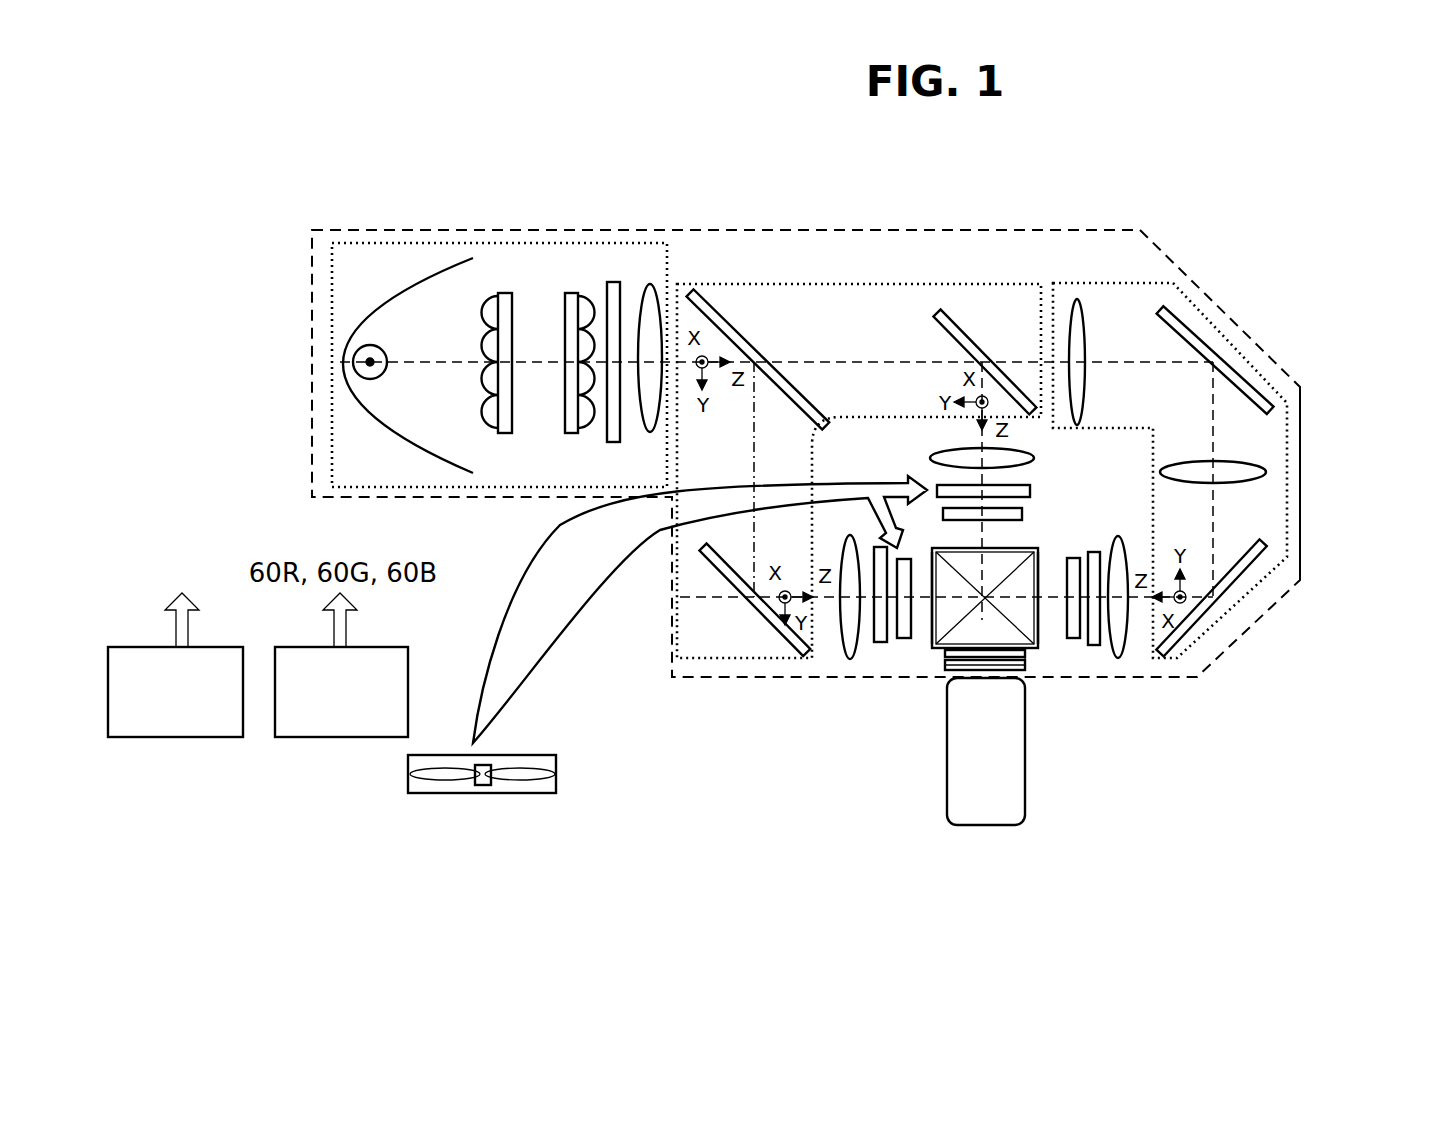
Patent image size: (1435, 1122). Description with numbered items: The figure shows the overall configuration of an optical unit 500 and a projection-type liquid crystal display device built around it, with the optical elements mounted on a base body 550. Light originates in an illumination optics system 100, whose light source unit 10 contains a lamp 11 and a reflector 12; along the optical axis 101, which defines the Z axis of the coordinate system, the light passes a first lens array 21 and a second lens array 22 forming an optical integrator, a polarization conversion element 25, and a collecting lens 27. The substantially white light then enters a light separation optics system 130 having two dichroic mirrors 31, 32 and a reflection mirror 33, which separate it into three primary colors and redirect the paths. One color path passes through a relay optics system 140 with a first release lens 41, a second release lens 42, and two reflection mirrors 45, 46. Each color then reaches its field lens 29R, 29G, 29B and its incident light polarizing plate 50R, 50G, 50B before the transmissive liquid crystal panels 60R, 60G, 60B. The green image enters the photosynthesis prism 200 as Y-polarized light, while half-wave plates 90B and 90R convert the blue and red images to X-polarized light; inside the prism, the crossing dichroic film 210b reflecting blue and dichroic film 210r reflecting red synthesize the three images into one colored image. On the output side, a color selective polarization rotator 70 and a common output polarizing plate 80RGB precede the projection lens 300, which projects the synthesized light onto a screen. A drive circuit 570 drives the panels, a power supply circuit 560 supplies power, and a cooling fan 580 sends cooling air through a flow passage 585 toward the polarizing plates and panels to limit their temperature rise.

The light source unit 10 is at (400, 297).
The lamp 11 is at (390, 343).
The reflector 12 is at (388, 300).
The illumination optics system 100 is at (472, 240).
The optical axis 101 is at (540, 365).
The first lens array 21 is at (507, 293).
The second lens array 22 is at (571, 293).
The polarization conversion element 25 is at (615, 282).
The collecting lens 27 is at (656, 290).
The dichroic mirror 31 is at (720, 310).
The dichroic mirror 32 is at (955, 320).
The reflection mirror 33 is at (748, 625).
The first release lens 41 is at (1080, 300).
The second release lens 42 is at (1265, 470).
The reflection mirror 45 is at (1190, 328).
The reflection mirror 46 is at (1262, 560).
The light separation optics system 130 is at (862, 281).
The relay optics system 140 is at (1127, 277).
The optical unit 500 is at (793, 226).
The base body 550 is at (1300, 500).
The field lens 29R is at (1122, 655).
The field lens 29G is at (940, 455).
The field lens 29B is at (845, 652).
The incident light polarizing plate 50R is at (1075, 640).
The incident light polarizing plate 50G is at (938, 488).
The incident light polarizing plate 50B is at (880, 645).
The transmissive liquid crystal panel 60R is at (1095, 648).
The transmissive liquid crystal panel 60G is at (1035, 500).
The transmissive liquid crystal panel 60B is at (903, 640).
The λ/2 wave plate 90R is at (1048, 645).
The λ/2 wave plate 90B is at (935, 652).
The photosynthesis prism 200 is at (943, 655).
The dichroic film 210r is at (950, 658).
The dichroic film 210b is at (1045, 662).
The color selective polarization rotator 70 is at (935, 672).
The output polarizing plate 80RGB is at (1030, 662).
The projection lens 300 is at (985, 828).
The power supply circuit 560 is at (178, 740).
The drive circuit 570 is at (340, 740).
The cooling fan 580 is at (483, 795).
The flow passage 585 is at (560, 672).